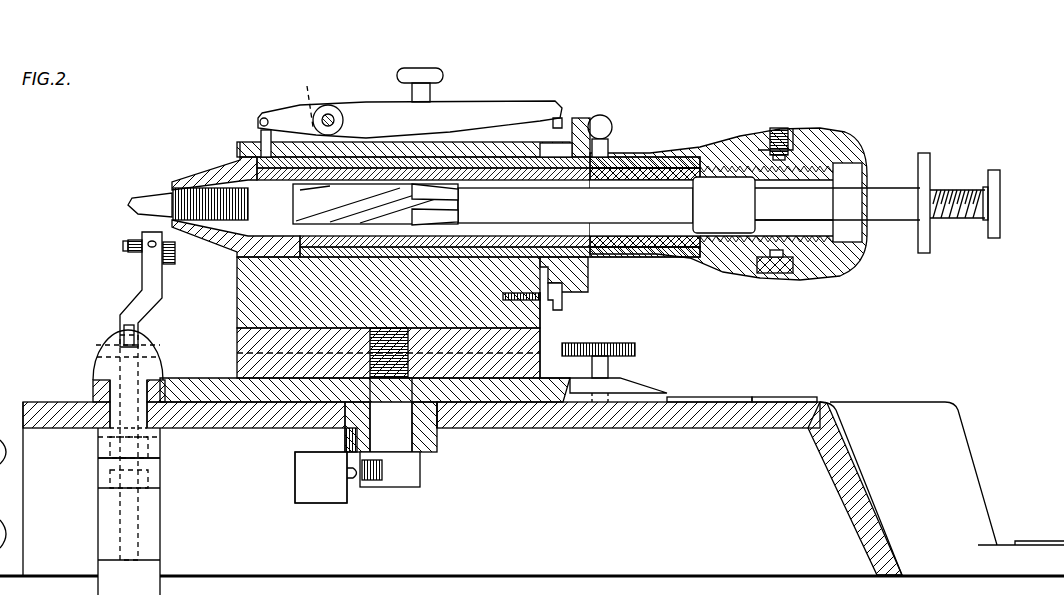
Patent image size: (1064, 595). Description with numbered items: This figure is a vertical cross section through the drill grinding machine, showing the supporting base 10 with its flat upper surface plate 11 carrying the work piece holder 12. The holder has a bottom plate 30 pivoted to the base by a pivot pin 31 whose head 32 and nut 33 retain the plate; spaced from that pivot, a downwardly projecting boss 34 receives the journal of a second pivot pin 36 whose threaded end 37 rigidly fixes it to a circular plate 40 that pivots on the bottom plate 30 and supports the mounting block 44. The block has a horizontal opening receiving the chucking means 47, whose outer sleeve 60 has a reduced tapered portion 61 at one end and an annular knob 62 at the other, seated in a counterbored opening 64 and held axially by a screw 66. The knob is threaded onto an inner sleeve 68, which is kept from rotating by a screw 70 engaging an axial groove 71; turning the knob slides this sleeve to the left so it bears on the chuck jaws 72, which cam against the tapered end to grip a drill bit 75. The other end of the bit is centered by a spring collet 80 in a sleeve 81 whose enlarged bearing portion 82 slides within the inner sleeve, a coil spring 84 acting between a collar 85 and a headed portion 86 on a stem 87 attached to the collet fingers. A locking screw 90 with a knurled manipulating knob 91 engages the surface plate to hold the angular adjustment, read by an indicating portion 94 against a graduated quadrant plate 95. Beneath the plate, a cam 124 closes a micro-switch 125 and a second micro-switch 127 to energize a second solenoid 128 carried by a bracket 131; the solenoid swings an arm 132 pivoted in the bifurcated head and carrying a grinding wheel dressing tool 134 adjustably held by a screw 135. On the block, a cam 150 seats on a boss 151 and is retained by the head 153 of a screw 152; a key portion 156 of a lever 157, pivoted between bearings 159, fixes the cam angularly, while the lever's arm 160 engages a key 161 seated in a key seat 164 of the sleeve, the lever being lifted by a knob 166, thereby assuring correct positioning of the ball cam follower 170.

The supporting base 10 is at (963, 471).
The upper surface plate portion 11 is at (747, 420).
The work piece holder 12 is at (232, 138).
The bottom plate 30 is at (185, 380).
The pivot pin 31 is at (115, 393).
The head 32 is at (97, 365).
The nut 33 is at (110, 460).
The boss 34 is at (430, 420).
The pivot pin 36 is at (391, 390).
The threaded end 37 is at (458, 396).
The plate 40 is at (543, 343).
The mounting block 44 is at (242, 302).
The chucking means 47 is at (733, 133).
The outer shell or sleeve 60 is at (683, 150).
The reduced tapered portion 61 is at (177, 176).
The annular knob 62 is at (817, 128).
The counterbored opening 64 is at (762, 258).
The screw 66 is at (779, 128).
The sleeve 68 is at (668, 240).
The screw 70 is at (627, 165).
The axially extending groove 71 is at (690, 150).
The chuck jaws 72 is at (207, 193).
The drill bit 75 is at (143, 195).
The spring collet 80 is at (427, 192).
The sleeve 81 is at (893, 206).
The enlarged bearing portion 82 is at (720, 226).
The coil spring 84 is at (938, 190).
The collar 85 is at (926, 254).
The headed portion 86 is at (993, 236).
The stem 87 is at (974, 190).
The locking screw 90 is at (600, 363).
The knurled manipulating knob 91 is at (633, 343).
The indicating portion 94 is at (702, 398).
The graduated quadrant plate 95 is at (777, 398).
The cam 124 is at (400, 480).
The micro-switch 125 is at (315, 490).
The second micro-switch 127 is at (321, 477).
The second solenoid 128 is at (153, 535).
The bracket 131 is at (163, 469).
The arm 132 is at (152, 279).
The grinding wheel dressing tool 134 is at (127, 245).
The screw 135 is at (143, 240).
The cam 150 is at (576, 118).
The boss 151 is at (543, 147).
The screw 152 is at (548, 304).
The head 153 is at (563, 296).
The key portion 156 is at (553, 118).
The lever 157 is at (372, 110).
The bearings 159 is at (310, 94).
The arm 160 is at (282, 118).
The key 161 is at (263, 135).
The key seat 164 is at (233, 155).
The knob 166 is at (420, 70).
The ball cam follower 170 is at (600, 121).